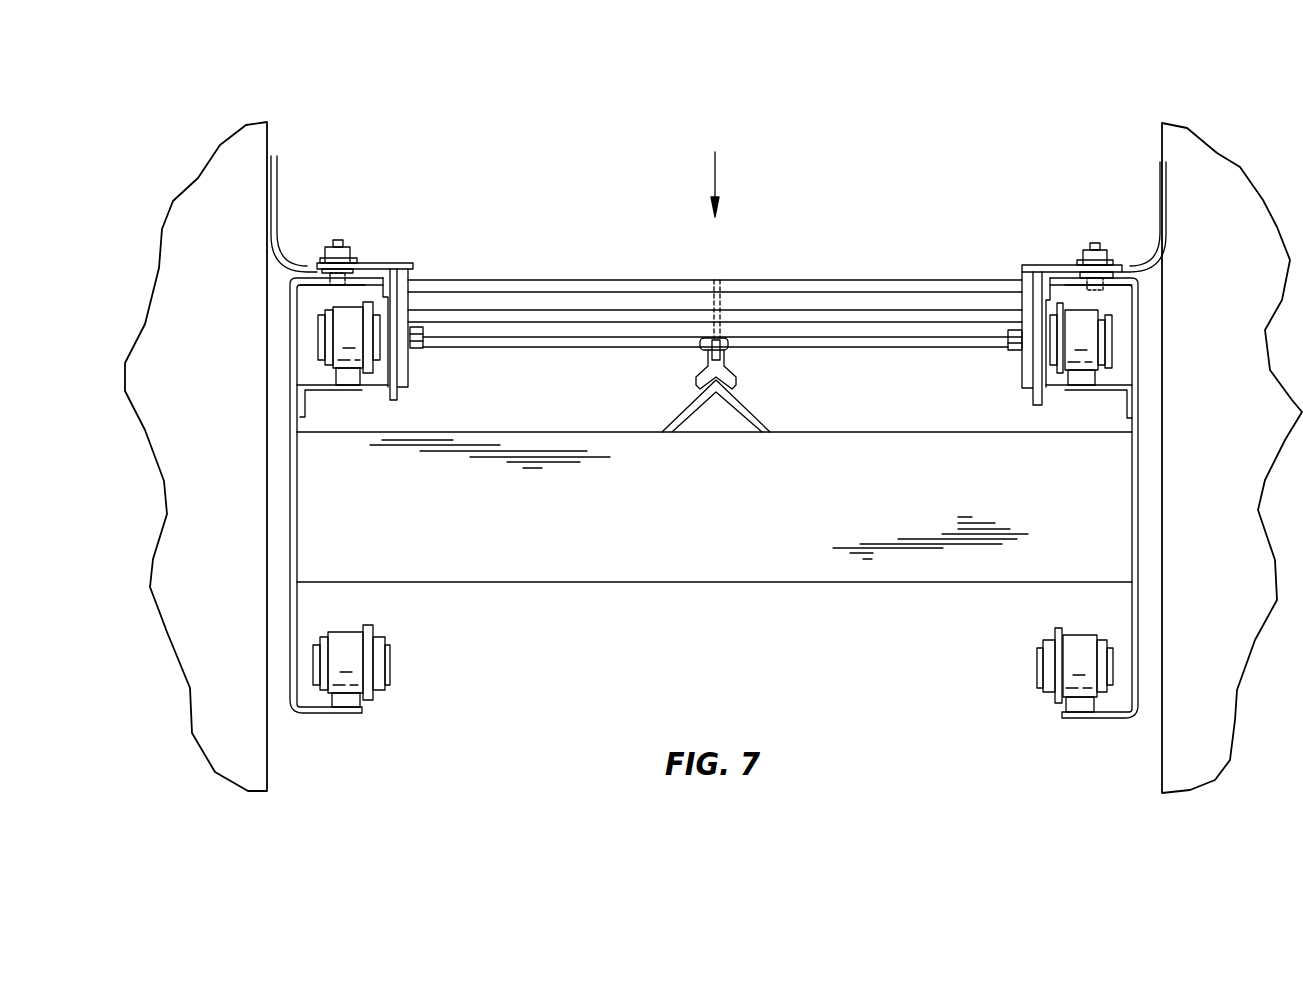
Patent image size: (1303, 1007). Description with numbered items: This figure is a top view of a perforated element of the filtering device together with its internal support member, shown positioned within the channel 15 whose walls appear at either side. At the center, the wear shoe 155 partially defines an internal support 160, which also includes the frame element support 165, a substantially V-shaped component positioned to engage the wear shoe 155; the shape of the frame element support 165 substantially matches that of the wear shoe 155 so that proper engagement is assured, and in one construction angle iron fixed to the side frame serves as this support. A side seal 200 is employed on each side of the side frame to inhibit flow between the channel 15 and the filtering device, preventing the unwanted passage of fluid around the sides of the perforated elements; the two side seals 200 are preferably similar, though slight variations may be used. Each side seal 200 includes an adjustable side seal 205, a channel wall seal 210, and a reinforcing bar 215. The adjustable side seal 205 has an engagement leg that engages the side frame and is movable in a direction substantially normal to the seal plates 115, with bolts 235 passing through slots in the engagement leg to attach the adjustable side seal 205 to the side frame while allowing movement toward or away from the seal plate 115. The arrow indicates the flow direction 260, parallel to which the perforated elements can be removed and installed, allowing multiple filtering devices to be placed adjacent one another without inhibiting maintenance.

The channel 15 is at (210, 187).
The seal plate 115 is at (389, 396).
The wear shoe 155 is at (706, 358).
The internal support 160 is at (741, 387).
The frame element support 165 is at (693, 410).
The side seal 200 is at (367, 185).
The adjustable side seal 205 is at (375, 272).
The channel wall seal 210 is at (270, 233).
The reinforcing bar 215 is at (357, 259).
The bolt 235 is at (336, 240).
The flow direction 260 is at (717, 175).